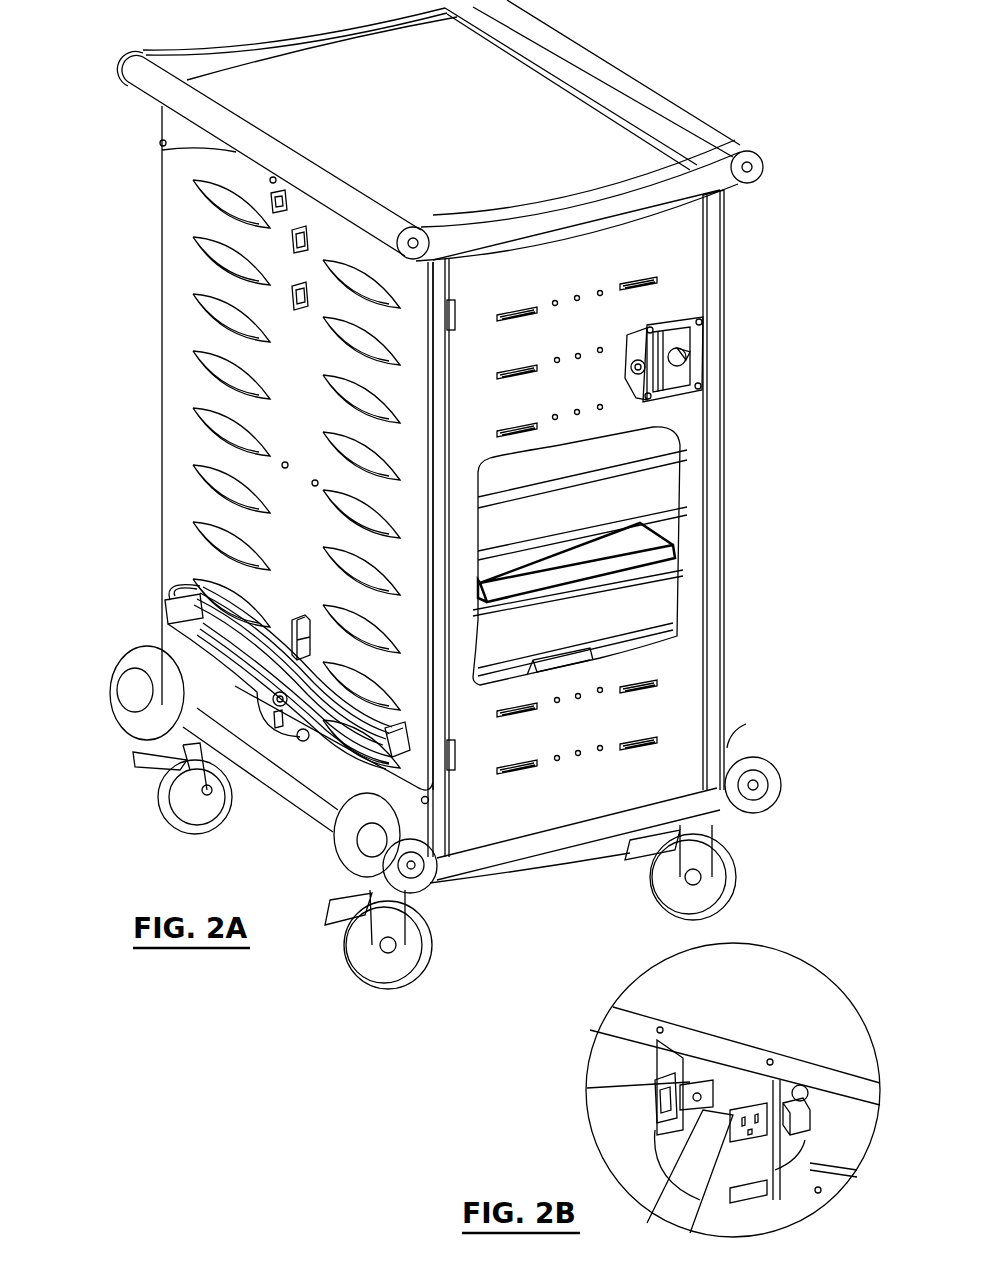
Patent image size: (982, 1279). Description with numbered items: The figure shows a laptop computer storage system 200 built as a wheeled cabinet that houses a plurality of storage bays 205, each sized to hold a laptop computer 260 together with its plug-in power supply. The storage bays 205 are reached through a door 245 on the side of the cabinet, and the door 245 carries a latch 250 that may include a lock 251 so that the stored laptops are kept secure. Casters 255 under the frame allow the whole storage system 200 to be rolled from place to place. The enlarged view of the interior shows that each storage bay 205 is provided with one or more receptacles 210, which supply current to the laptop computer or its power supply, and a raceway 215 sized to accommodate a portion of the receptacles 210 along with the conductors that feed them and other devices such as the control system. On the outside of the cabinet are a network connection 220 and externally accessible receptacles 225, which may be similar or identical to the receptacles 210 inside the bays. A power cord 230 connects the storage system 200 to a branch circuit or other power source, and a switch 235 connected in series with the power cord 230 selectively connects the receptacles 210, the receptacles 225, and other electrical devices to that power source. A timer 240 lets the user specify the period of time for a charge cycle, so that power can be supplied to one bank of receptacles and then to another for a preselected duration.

In FIG. 2A, the laptop computer storage system 200 is at (700, 82).
In FIG. 2A, the storage bays 205 is at (653, 467).
In FIG. 2B, the receptacles 210 is at (655, 1093).
In FIG. 2B, the raceway 215 is at (668, 1067).
In FIG. 2A, the network connection 220 is at (270, 200).
In FIG. 2A, the externally accessible receptacles 225 is at (292, 240).
In FIG. 2A, the power cord 230 is at (274, 698).
In FIG. 2A, the timer 240 is at (272, 704).
In FIG. 2A, the switch 235 is at (295, 618).
In FIG. 2A, the door 245 is at (673, 252).
In FIG. 2A, the latch 250 is at (703, 355).
In FIG. 2A, the lock 251 is at (632, 377).
In FIG. 2A, the casters 255 is at (665, 900).
In FIG. 2A, the laptop computer 260 is at (583, 564).